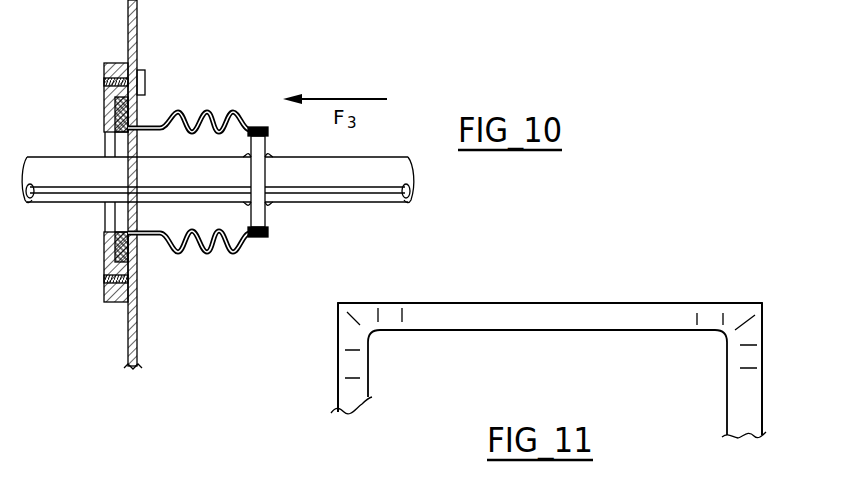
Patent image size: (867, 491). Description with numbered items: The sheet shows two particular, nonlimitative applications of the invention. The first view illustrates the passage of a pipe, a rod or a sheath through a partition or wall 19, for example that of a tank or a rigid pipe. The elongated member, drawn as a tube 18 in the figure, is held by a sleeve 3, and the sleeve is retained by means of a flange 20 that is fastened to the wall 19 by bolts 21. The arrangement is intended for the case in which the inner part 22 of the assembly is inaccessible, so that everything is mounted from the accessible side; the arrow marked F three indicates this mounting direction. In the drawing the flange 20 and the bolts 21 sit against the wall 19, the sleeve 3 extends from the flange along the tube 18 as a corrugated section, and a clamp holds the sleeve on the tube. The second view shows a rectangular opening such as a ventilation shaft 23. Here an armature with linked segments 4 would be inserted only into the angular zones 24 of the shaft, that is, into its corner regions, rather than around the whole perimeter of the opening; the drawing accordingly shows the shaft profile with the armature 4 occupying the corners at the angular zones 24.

In FIG. 10, the sleeve 3 is at (178, 108).
In FIG. 11, the armature with linked segments 4 is at (741, 325).
In FIG. 10, the pipe 18 is at (328, 186).
In FIG. 10, the partition or wall 19 is at (138, 338).
In FIG. 10, the flange 20 is at (104, 100).
In FIG. 10, the bolts 21 is at (143, 70).
In FIG. 10, the inner part 22 is at (86, 254).
In FIG. 11, the ventilation shaft 23 is at (762, 404).
In FIG. 11, the angular zones 24 is at (338, 305).